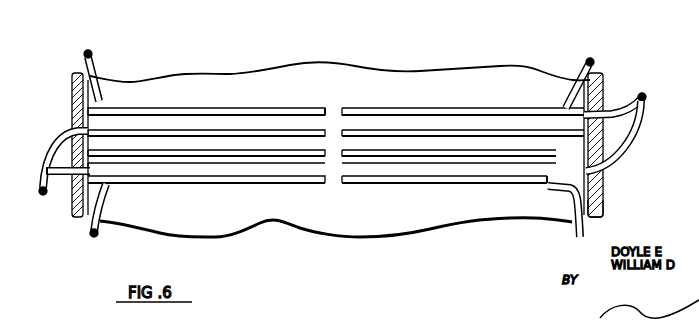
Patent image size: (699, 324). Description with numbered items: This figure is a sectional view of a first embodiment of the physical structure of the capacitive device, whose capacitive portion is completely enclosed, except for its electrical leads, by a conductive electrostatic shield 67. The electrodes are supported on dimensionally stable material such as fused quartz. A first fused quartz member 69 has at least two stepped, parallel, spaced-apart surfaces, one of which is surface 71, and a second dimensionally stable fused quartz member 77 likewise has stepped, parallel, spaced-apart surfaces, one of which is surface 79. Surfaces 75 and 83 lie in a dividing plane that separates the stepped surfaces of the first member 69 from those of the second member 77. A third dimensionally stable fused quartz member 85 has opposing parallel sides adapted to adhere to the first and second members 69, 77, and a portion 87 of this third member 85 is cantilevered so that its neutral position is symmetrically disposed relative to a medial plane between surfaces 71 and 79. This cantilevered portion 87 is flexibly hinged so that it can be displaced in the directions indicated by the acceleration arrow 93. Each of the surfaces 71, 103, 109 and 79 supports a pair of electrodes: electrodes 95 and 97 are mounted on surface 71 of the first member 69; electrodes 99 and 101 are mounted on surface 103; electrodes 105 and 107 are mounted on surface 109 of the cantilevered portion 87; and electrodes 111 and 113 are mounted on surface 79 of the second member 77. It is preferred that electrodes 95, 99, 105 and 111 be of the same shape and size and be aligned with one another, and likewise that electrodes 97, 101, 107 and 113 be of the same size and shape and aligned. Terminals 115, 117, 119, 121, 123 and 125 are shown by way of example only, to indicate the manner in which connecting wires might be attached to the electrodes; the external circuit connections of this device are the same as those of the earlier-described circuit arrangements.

The conductive electrostatic shield 67 is at (605, 207).
The first fused quartz member 69 is at (471, 77).
The surface 71 is at (497, 106).
The surface 75 is at (601, 97).
The second fused quartz member 77 is at (352, 239).
The surface 79 is at (462, 185).
The surface 83 is at (604, 192).
The third fused quartz member 85 is at (338, 150).
The cantilevered portion 87 is at (162, 147).
The acceleration arrow 93 is at (698, 130).
The electrode 95 is at (232, 113).
The electrode 97 is at (468, 111).
The electrode 99 is at (276, 137).
The electrode 101 is at (530, 137).
The surface 103 is at (428, 137).
The electrode 105 is at (292, 157).
The electrode 107 is at (398, 158).
The surface 109 is at (237, 150).
The electrode 111 is at (257, 177).
The electrode 113 is at (513, 183).
The terminal 115 is at (92, 70).
The terminal 117 is at (577, 65).
The terminal 119 is at (47, 197).
The terminal 121 is at (648, 100).
The terminal 123 is at (102, 220).
The terminal 125 is at (578, 227).